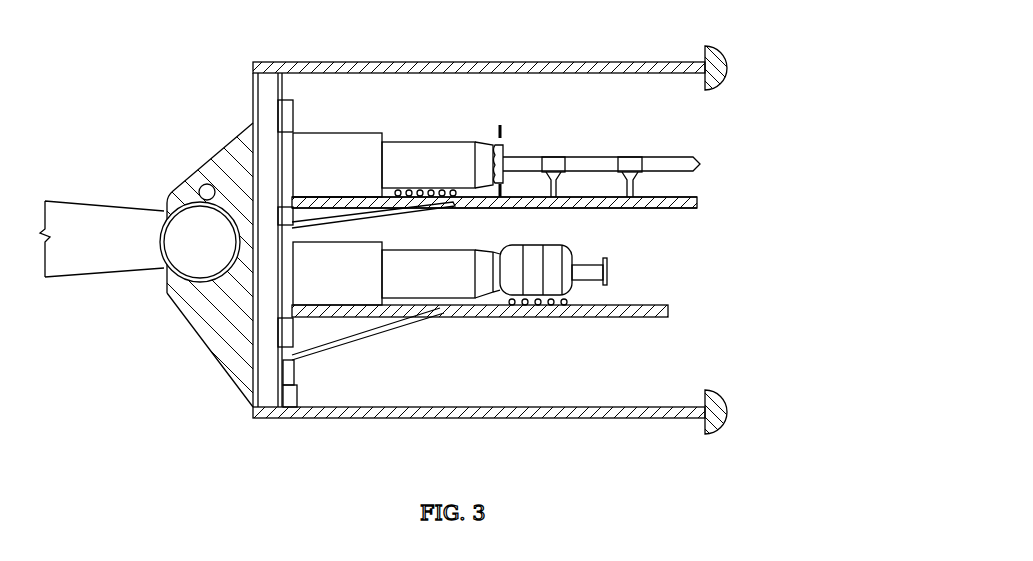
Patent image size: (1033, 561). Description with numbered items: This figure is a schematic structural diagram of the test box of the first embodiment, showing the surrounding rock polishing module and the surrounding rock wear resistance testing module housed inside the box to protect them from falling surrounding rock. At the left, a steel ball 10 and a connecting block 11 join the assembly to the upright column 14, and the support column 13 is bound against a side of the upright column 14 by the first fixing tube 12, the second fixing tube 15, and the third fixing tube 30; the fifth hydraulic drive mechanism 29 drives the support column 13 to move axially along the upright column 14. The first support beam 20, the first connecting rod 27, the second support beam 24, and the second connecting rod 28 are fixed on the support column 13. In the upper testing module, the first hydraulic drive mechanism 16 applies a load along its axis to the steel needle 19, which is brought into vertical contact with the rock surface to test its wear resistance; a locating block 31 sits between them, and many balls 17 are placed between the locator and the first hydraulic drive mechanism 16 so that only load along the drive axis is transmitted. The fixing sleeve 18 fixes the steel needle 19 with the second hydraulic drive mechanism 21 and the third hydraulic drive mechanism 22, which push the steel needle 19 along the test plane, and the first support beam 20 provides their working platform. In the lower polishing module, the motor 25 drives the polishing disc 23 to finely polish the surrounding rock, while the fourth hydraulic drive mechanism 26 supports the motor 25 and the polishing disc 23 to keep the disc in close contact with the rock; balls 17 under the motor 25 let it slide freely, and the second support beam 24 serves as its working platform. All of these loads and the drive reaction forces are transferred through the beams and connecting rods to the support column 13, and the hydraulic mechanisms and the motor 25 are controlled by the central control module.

The steel ball 10 is at (203, 238).
The connecting block 11 is at (167, 194).
The first fixing tube 12 is at (283, 213).
The support column 13 is at (283, 182).
The upright column 14 is at (262, 143).
The second fixing tube 15 is at (282, 118).
The first hydraulic drive mechanism 16 is at (363, 155).
The balls 17 is at (453, 190).
The fixing sleeve 18 is at (550, 160).
The steel needle 19 is at (700, 166).
The first support beam 20 is at (697, 205).
The second hydraulic drive mechanism 21 is at (653, 208).
The third hydraulic drive mechanism 22 is at (578, 210).
The polishing disc 23 is at (607, 272).
The second support beam 24 is at (623, 313).
The motor 25 is at (557, 272).
The fourth hydraulic drive mechanism 26 is at (415, 275).
The first connecting rod 27 is at (319, 226).
The second connecting rod 28 is at (333, 342).
The fifth hydraulic drive mechanism 29 is at (285, 402).
The third fixing tube 30 is at (278, 343).
The locating block 31 is at (509, 158).